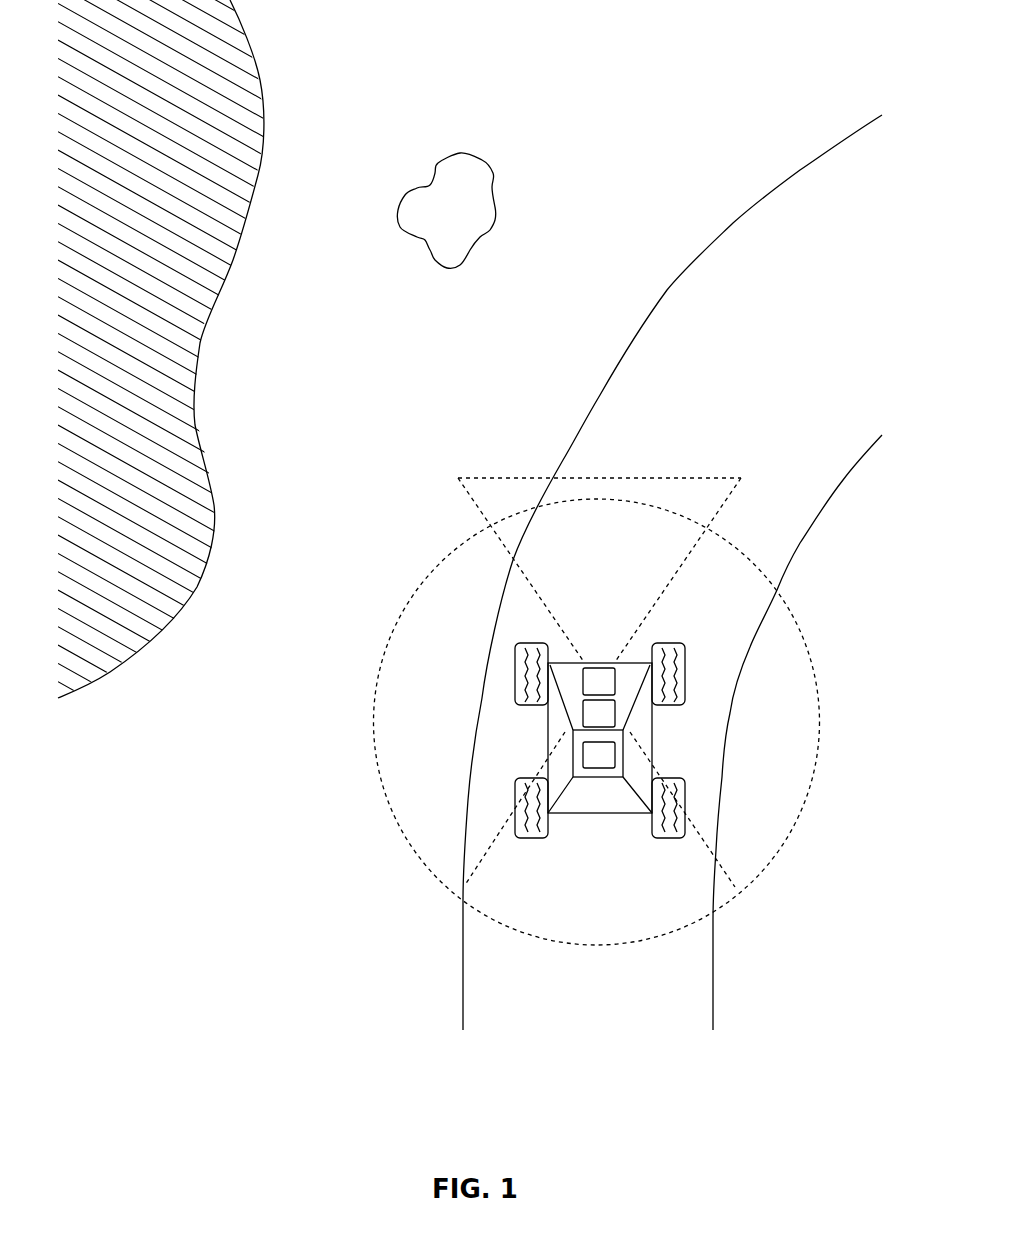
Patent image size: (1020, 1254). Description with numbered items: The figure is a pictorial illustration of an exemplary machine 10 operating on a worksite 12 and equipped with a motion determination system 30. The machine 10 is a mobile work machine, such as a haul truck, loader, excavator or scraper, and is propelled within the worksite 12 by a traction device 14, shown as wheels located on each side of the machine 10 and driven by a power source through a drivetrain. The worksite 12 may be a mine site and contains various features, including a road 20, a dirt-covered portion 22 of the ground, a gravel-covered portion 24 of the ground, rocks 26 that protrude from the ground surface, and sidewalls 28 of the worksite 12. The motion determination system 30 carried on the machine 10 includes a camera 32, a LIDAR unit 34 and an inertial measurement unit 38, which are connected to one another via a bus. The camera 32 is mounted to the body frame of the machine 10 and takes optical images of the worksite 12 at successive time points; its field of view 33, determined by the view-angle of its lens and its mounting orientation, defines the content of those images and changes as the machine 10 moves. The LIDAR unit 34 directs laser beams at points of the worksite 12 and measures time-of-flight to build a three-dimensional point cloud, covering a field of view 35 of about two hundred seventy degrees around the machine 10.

The machine 10 is at (600, 770).
The worksite 12 is at (448, 61).
The traction device 14 is at (663, 838).
The road 20 is at (760, 348).
The dirt-covered portion 22 is at (657, 363).
The gravel-covered portion 24 is at (525, 313).
The rocks 26 is at (495, 173).
The sidewalls 28 is at (203, 328).
The motion determination system 30 is at (652, 627).
The camera 32 is at (599, 681).
The field of view 33 is at (473, 503).
The LIDAR unit 34 is at (599, 713).
The field of view 35 is at (378, 724).
The inertial measurement unit 38 is at (599, 755).